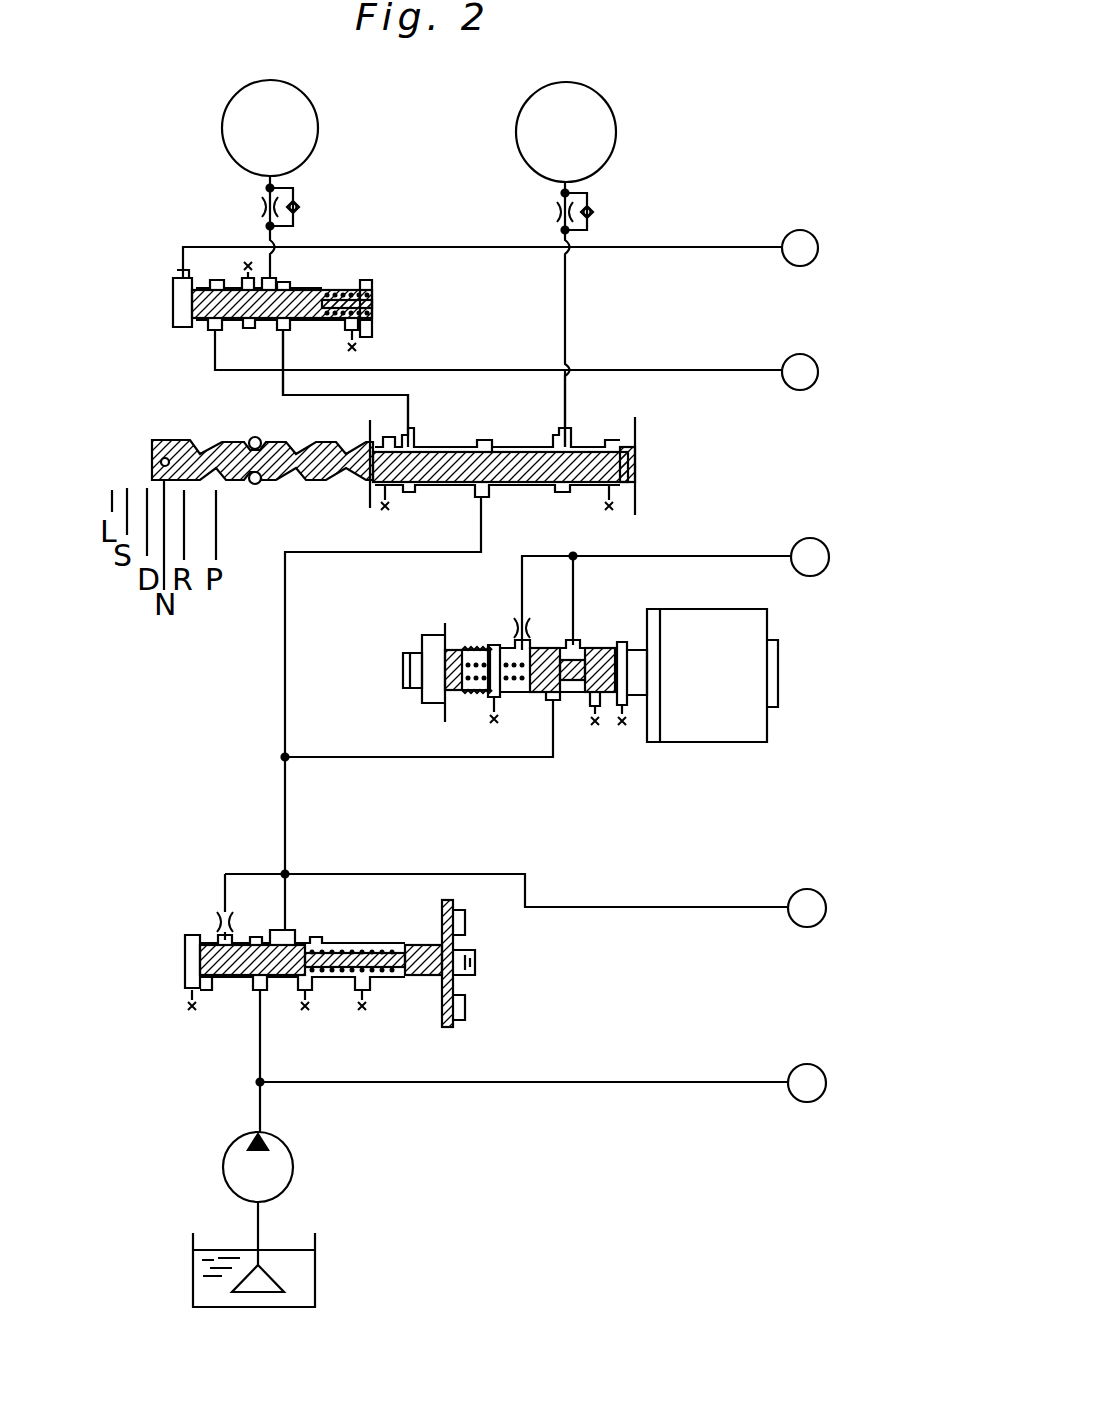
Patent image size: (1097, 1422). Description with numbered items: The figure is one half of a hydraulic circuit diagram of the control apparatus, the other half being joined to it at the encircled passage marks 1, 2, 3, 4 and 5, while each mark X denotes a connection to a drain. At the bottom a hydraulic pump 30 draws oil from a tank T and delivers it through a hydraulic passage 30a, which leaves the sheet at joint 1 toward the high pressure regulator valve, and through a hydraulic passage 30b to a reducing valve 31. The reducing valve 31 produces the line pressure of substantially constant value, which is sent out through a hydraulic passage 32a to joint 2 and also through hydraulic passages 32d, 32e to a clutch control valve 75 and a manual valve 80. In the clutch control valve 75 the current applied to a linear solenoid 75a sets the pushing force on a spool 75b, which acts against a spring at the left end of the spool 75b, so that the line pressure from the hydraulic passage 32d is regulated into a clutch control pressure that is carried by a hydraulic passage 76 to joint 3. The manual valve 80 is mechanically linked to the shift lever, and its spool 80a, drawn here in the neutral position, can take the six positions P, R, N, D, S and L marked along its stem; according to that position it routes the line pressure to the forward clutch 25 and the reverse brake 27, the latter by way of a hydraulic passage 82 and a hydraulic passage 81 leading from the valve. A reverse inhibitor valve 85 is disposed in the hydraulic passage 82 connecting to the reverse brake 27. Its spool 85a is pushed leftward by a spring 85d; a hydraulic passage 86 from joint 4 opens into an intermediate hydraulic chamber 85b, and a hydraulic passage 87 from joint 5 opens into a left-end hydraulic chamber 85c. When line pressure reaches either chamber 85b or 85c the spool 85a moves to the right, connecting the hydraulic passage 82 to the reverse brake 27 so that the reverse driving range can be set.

The forward clutch 25 is at (546, 152).
The reverse brake 27 is at (250, 148).
The hydraulic pump 30 is at (293, 1167).
The hydraulic passage 30a is at (666, 1084).
The hydraulic passage 30b is at (262, 1044).
The reducing valve 31 is at (498, 966).
The hydraulic passage 32a is at (740, 908).
The hydraulic passage 32d is at (392, 758).
The hydraulic passage 32e is at (398, 554).
The clutch control valve 75 is at (627, 684).
The linear solenoid 75a is at (738, 690).
The spool 75b is at (534, 700).
The hydraulic passage 76 is at (688, 556).
The manual valve 80 is at (449, 472).
The spool 80a is at (448, 486).
The hydraulic passage 81 is at (563, 418).
The hydraulic passage 82 is at (361, 396).
The reverse inhibitor valve 85 is at (282, 348).
The spool 85a is at (334, 292).
The intermediate hydraulic chamber 85b is at (213, 322).
The left-end hydraulic chamber 85c is at (175, 307).
The spring 85d is at (375, 278).
The hydraulic passage 86 is at (478, 370).
The hydraulic passage 87 is at (479, 247).
The hydraulic passage joint 1 is at (807, 1083).
The hydraulic passage joint 2 is at (807, 908).
The hydraulic passage joint 3 is at (810, 557).
The hydraulic passage joint 4 is at (800, 372).
The hydraulic passage joint 5 is at (800, 248).
The tank T is at (315, 1268).